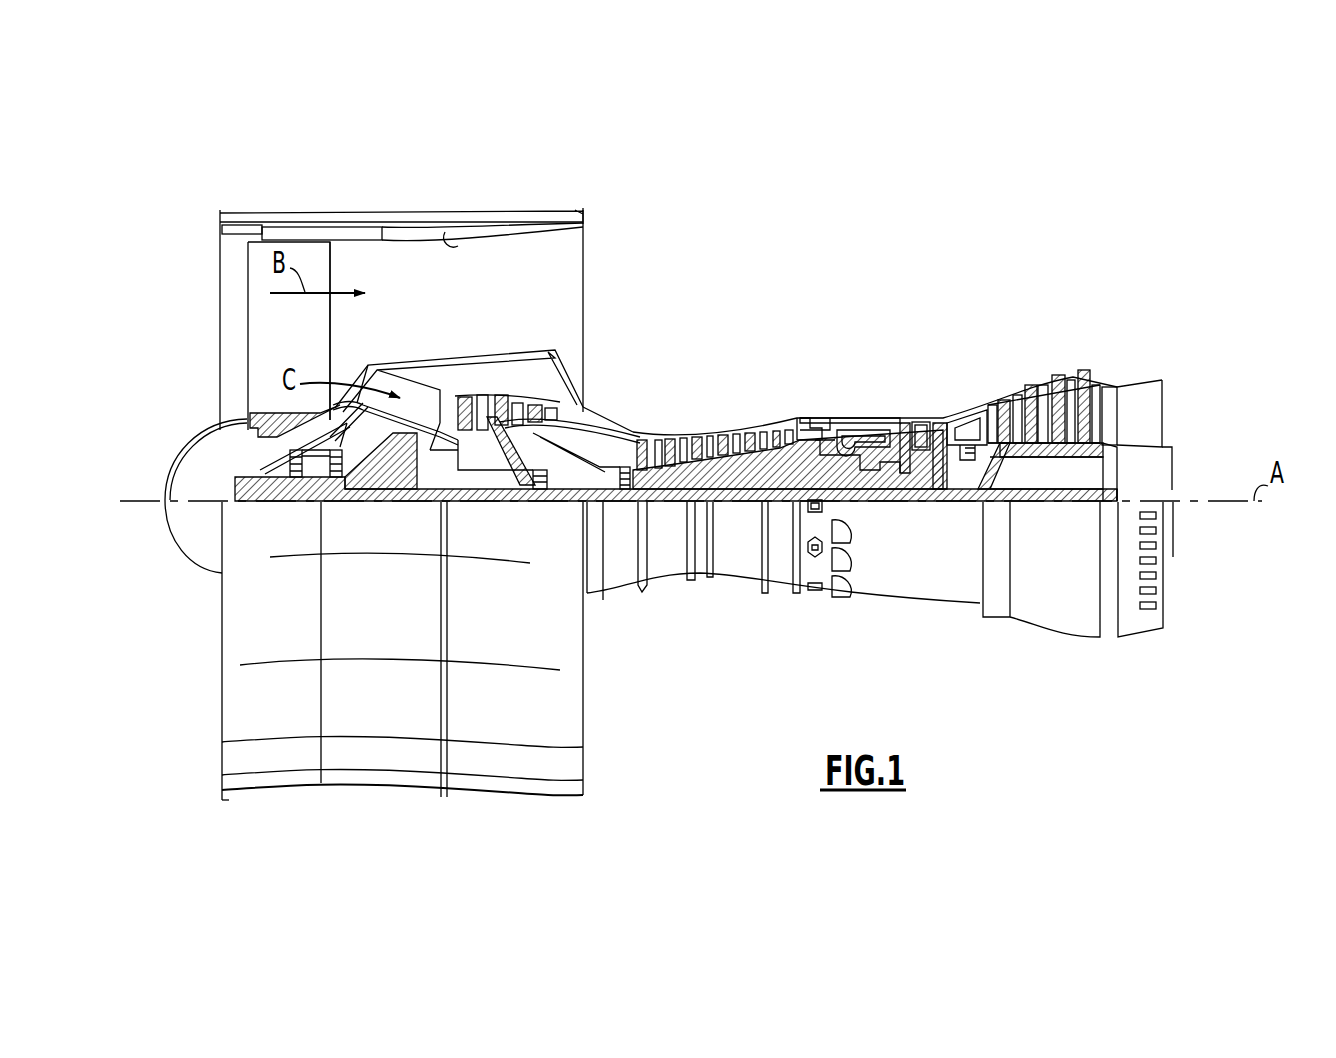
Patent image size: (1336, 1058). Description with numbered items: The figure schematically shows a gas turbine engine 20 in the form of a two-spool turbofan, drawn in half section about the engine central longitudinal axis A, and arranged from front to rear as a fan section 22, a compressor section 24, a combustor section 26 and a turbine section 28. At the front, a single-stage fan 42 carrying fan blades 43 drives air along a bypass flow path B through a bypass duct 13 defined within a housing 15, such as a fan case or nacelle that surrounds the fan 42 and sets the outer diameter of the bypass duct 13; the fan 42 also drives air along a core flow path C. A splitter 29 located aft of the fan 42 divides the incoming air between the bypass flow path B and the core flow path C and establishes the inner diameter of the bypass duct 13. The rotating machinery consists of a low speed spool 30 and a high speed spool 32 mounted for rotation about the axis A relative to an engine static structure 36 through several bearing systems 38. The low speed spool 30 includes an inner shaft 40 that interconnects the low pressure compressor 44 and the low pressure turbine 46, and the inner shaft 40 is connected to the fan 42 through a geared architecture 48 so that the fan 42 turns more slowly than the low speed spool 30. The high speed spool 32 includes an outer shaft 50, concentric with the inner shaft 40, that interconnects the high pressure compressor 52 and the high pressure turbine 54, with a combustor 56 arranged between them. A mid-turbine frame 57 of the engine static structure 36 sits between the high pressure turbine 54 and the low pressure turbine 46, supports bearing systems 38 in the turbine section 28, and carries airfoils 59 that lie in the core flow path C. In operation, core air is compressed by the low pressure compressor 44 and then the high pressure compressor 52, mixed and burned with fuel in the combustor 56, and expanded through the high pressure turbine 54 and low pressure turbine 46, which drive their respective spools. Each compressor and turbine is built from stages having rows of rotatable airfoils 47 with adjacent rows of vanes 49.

The bypass duct 13 is at (453, 245).
The housing 15 is at (402, 222).
The gas turbine engine 20 is at (858, 268).
The fan section 22 is at (333, 208).
The compressor section 24 is at (630, 412).
The combustor section 26 is at (856, 396).
The turbine section 28 is at (1000, 360).
The splitter 29 is at (357, 403).
The low speed spool 30 is at (742, 590).
The high speed spool 32 is at (787, 447).
The engine static structure 36 is at (780, 582).
The bearing systems 38 is at (530, 497).
The inner shaft 40 is at (607, 590).
The fan 42 is at (302, 344).
The fan blades 43 is at (318, 348).
The low pressure compressor 44 is at (510, 412).
The low pressure turbine 46 is at (1035, 395).
The rotatable airfoils 47 is at (452, 418).
The geared architecture 48 is at (410, 497).
The vanes 49 is at (484, 413).
The outer shaft 50 is at (865, 470).
The high pressure compressor 52 is at (723, 432).
The high pressure turbine 54 is at (947, 430).
The combustor 56 is at (858, 445).
The mid-turbine frame 57 is at (967, 405).
The airfoils 59 is at (995, 460).